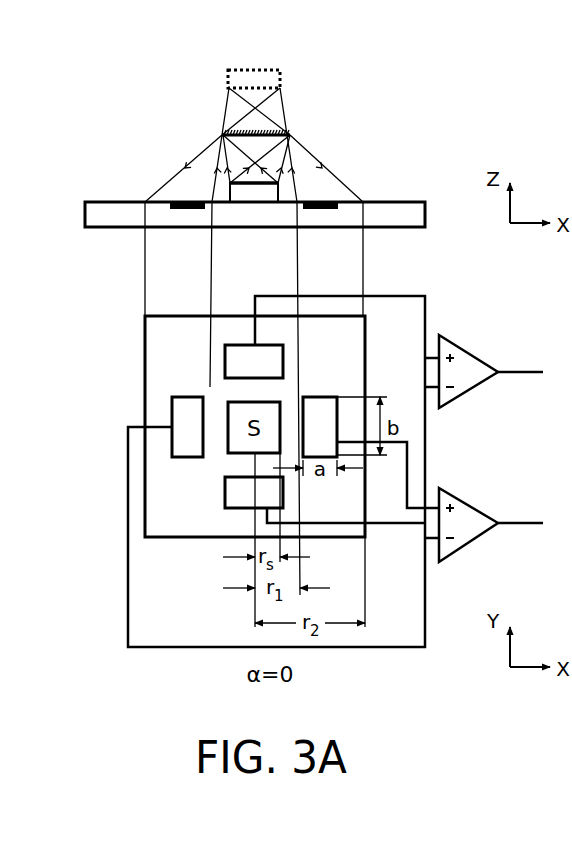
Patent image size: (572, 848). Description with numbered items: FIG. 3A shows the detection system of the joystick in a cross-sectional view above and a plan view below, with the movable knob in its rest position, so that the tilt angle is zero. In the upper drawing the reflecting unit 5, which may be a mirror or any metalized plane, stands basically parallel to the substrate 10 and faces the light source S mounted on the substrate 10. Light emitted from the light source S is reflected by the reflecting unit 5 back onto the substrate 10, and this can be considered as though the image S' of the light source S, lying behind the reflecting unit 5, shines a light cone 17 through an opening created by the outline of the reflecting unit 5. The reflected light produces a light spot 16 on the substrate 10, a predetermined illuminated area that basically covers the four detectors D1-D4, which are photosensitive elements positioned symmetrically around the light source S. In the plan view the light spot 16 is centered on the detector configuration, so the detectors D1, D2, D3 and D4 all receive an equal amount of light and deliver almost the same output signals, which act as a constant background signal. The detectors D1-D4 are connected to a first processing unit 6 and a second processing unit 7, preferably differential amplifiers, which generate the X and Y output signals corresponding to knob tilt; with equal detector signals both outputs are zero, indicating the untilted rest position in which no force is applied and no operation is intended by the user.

The reflecting unit 5 is at (227, 135).
The first processing unit 6 is at (470, 372).
The second processing unit 7 is at (470, 523).
The substrate 10 is at (388, 212).
The light spot 16 is at (167, 355).
The light cone 17 is at (312, 167).
The light source S is at (218, 169).
The image of the light source S' is at (254, 62).
The detectors D1-D4 is at (195, 208).
The first detector D1 is at (254, 361).
The second detector D2 is at (254, 492).
The third detector D3 is at (187, 427).
The fourth detector D4 is at (320, 427).